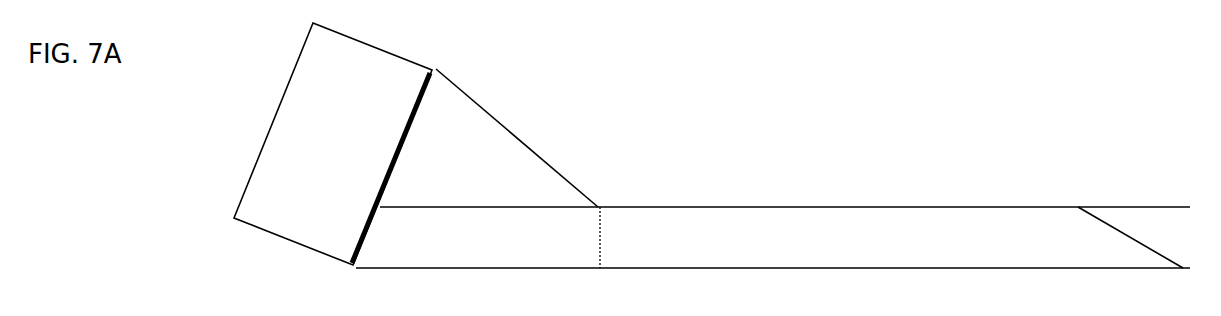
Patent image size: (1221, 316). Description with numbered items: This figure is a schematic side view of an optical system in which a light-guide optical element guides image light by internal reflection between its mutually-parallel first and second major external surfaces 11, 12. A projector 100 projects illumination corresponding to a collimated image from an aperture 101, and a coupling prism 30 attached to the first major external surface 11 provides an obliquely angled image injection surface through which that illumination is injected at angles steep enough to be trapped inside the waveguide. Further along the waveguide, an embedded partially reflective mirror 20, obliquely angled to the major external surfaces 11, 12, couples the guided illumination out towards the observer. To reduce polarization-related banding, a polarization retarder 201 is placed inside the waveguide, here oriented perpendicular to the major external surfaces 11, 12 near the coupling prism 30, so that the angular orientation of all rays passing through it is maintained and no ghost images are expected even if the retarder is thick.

The projector 100 is at (268, 137).
The aperture 101 is at (358, 248).
The coupling prism 30 is at (498, 122).
The first major external surface 11 is at (943, 207).
The second major external surface 12 is at (947, 270).
The polarization retarder 201 is at (600, 223).
The partially reflective mirror 20 is at (1093, 217).